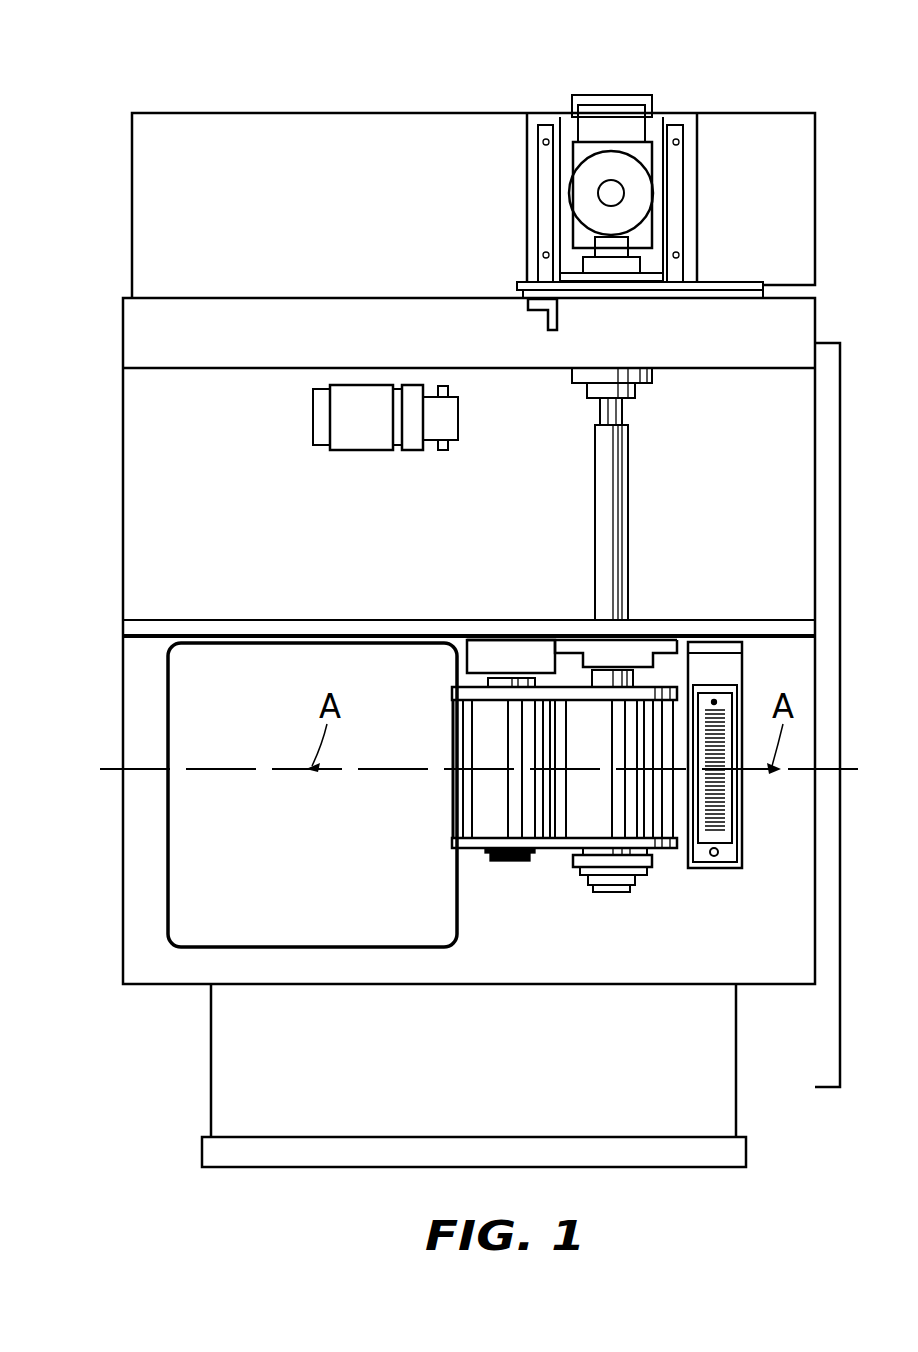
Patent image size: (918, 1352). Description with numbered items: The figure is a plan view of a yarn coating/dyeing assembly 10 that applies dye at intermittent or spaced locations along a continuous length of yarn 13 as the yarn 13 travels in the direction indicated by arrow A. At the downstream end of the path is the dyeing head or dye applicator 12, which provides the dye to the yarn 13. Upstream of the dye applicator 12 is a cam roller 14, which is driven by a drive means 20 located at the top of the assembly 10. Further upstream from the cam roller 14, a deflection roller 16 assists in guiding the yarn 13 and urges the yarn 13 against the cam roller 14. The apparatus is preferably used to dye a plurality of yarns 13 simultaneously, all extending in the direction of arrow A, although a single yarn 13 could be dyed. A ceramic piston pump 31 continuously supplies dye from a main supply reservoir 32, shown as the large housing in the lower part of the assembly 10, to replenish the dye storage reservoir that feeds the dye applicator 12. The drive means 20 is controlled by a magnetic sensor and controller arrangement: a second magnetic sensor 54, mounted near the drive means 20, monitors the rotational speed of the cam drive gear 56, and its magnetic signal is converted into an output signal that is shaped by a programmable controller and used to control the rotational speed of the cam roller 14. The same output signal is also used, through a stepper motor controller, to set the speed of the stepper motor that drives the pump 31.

The yarn dyeing assembly 10 is at (120, 117).
The drive means 20 is at (635, 149).
The cam drive gear 56 is at (678, 268).
The second magnetic sensor 54 is at (547, 317).
The ceramic piston pump 31 is at (320, 423).
The yarn 13 is at (352, 772).
The main supply reservoir 32 is at (168, 885).
The deflection roller 16 is at (487, 830).
The cam roller 14 is at (575, 832).
The dye applicator 12 is at (742, 850).